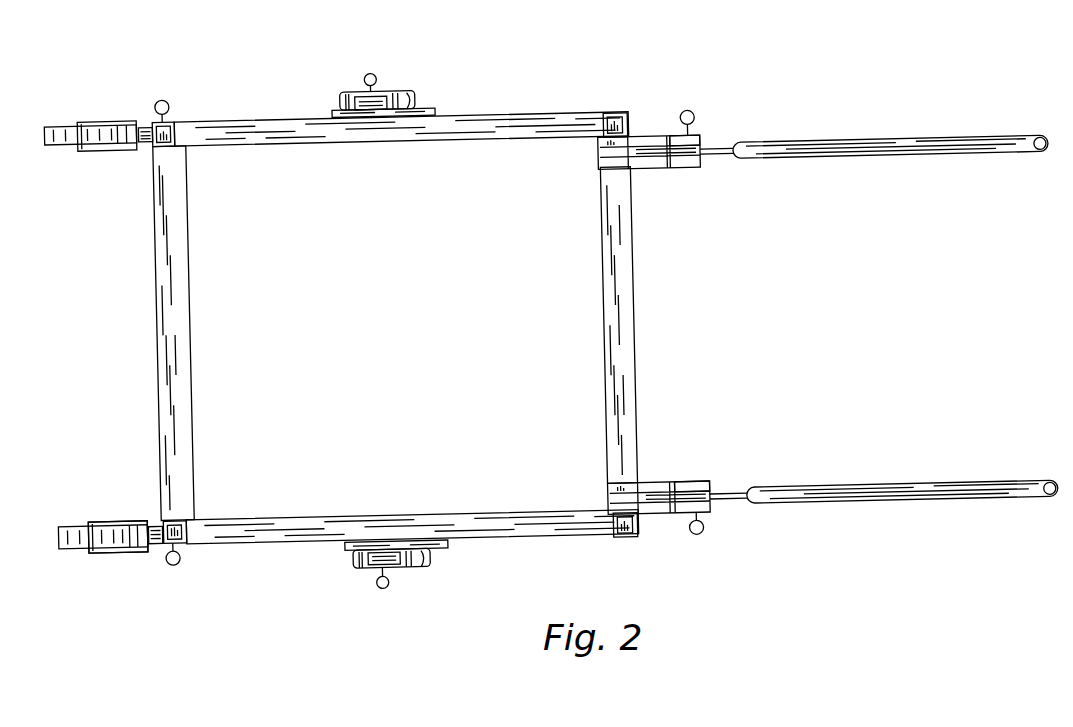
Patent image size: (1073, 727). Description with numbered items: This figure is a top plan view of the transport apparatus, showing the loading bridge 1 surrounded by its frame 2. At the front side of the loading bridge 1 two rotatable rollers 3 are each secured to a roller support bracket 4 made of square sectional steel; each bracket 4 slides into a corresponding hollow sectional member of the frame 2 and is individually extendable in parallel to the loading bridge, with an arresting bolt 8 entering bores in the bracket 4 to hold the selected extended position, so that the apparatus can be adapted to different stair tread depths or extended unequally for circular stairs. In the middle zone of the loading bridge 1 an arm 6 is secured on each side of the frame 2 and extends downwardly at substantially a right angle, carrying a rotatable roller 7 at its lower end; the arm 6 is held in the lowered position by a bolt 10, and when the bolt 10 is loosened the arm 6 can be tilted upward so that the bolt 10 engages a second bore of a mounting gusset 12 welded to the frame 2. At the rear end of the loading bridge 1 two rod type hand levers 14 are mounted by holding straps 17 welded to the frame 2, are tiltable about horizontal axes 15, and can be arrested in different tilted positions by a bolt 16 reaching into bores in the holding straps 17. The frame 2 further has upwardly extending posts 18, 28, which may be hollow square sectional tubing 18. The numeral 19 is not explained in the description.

The loading bridge 1 is at (412, 359).
The frame 2 is at (275, 122).
The rotatable roller 3 is at (112, 121).
The roller support bracket 4 is at (149, 137).
The arm 6 is at (372, 559).
The rotatable roller 7 is at (412, 95).
The arresting bolt 8 is at (173, 102).
The bolt 10 is at (383, 77).
The mounting gusset 12 is at (440, 113).
The hand lever 14 is at (919, 160).
The horizontal axis 15 is at (667, 173).
The bolt 16 is at (693, 117).
The holding strap 17 is at (704, 144).
The post 18 is at (178, 540).
The clamp 19 is at (90, 530).
The post 28 is at (617, 542).